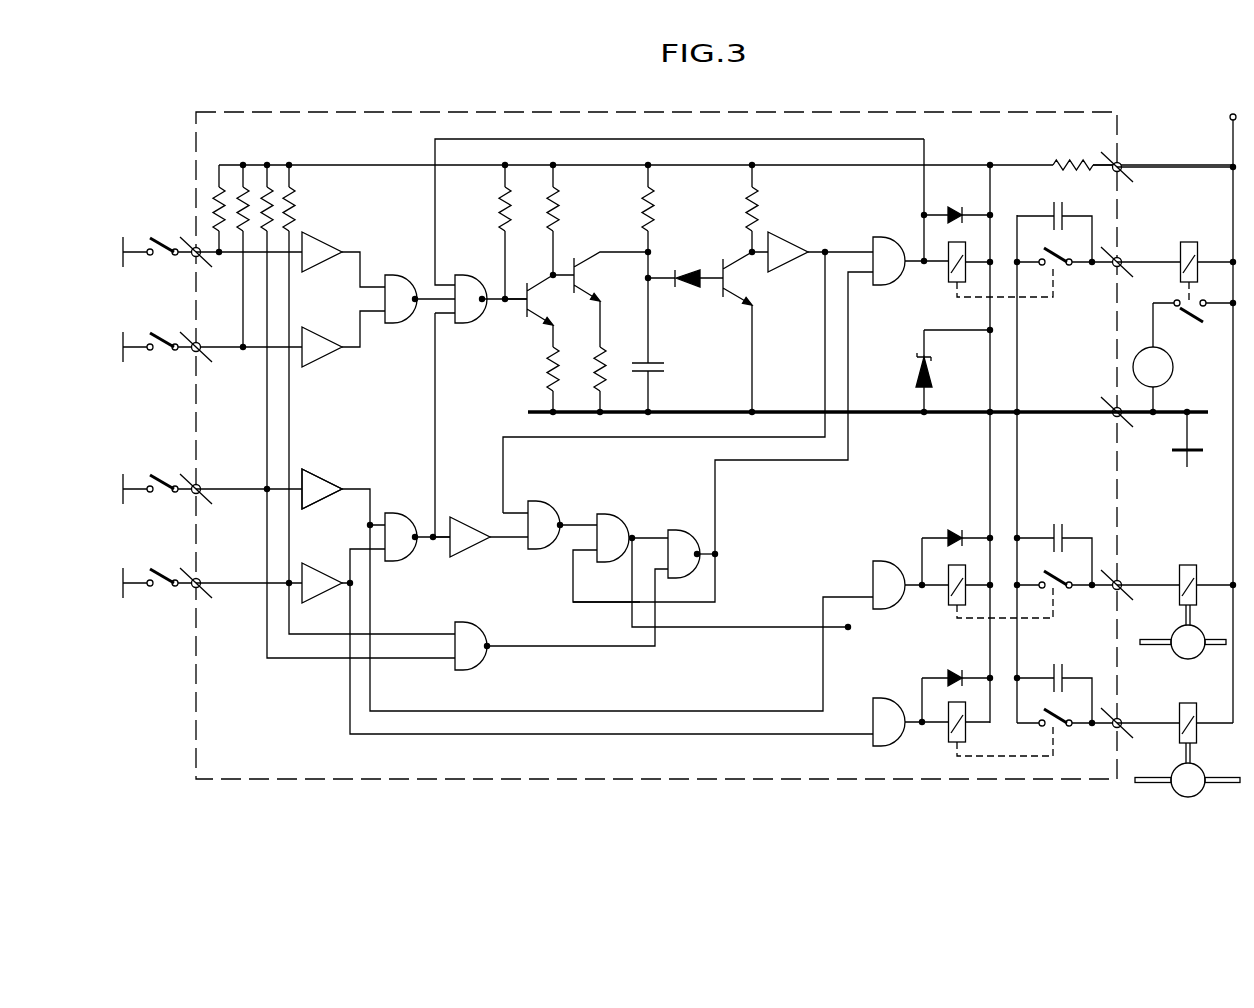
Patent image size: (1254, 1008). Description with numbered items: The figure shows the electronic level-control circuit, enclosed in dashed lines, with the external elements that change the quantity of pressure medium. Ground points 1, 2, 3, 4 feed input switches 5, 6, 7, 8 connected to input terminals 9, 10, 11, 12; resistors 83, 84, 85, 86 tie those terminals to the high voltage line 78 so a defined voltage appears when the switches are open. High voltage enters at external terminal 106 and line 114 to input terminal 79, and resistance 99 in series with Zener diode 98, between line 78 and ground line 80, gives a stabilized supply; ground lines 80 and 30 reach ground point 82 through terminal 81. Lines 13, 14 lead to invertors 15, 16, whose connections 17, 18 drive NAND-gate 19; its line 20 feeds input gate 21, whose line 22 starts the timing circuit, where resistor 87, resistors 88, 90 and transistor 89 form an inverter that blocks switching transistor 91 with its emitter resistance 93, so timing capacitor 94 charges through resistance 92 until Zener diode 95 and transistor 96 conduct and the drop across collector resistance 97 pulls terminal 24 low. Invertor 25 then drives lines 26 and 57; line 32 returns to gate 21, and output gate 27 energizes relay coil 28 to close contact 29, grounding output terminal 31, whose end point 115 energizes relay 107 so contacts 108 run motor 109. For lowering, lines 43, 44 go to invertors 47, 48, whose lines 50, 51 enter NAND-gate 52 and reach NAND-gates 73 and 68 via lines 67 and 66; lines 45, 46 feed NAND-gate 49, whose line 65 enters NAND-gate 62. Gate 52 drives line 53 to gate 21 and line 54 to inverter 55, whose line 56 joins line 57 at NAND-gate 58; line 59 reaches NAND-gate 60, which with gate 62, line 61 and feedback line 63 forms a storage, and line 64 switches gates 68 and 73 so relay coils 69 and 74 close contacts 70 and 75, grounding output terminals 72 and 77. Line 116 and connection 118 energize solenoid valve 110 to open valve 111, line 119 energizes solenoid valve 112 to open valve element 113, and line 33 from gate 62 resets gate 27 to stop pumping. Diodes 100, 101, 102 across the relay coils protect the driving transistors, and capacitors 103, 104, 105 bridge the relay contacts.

The ground point 1 is at (120, 263).
The ground point 2 is at (120, 358).
The ground point 3 is at (120, 499).
The ground point 4 is at (120, 594).
The input switch 5 is at (159, 238).
The input switch 6 is at (161, 332).
The input switch 7 is at (159, 473).
The input switch 8 is at (159, 572).
The input terminal 9 is at (190, 264).
The input terminal 10 is at (190, 360).
The input terminal 11 is at (190, 501).
The input terminal 12 is at (190, 598).
The line 13 is at (302, 256).
The line 14 is at (302, 355).
The invertor 15 is at (316, 236).
The invertor 16 is at (324, 355).
The output line 17 is at (361, 280).
The output line 18 is at (364, 330).
The NAND-gate 19 is at (386, 297).
The line 20 is at (420, 304).
The input gate 21 is at (470, 284).
The line 22 is at (482, 308).
The terminal 24 is at (756, 262).
The invertor 25 is at (790, 236).
The line 26 is at (831, 254).
The output gate 27 is at (882, 244).
The relay coil 28 is at (948, 284).
The relay contact 29 is at (1066, 274).
The ground line 30 is at (1017, 357).
The output terminal 31 is at (1123, 255).
The line 32 is at (927, 142).
The line 33 is at (848, 462).
The line 43 is at (302, 485).
The line 44 is at (302, 581).
The line 45 is at (400, 633).
The line 46 is at (390, 659).
The inverter 47 is at (325, 484).
The inverter 48 is at (310, 590).
The NAND-gate 49 is at (477, 656).
The line 50 is at (385, 515).
The line 51 is at (384, 560).
The NAND-gate 52 is at (414, 532).
The line 53 is at (438, 406).
The line 54 is at (452, 528).
The inverter 55 is at (460, 551).
The line 56 is at (510, 540).
The line 57 is at (505, 468).
The fourth gating means 58 is at (548, 518).
The line 59 is at (578, 528).
The NAND-gate 60 is at (600, 562).
The line 61 is at (635, 537).
The third gating means 62 is at (692, 534).
The feedback line 63 is at (573, 601).
The line 64 is at (745, 626).
The line 65 is at (570, 648).
The line 66 is at (658, 710).
The line 67 is at (724, 736).
The fifth gating means 68 is at (875, 562).
The relay coil 69 is at (950, 605).
The relay contact 70 is at (1060, 594).
The output terminal 72 is at (1118, 570).
The fifth gating means 73 is at (866, 750).
The relay coil 74 is at (946, 746).
The relay contact 75 is at (1064, 731).
The output terminal 77 is at (1123, 728).
The high voltage line 78 is at (1108, 171).
The input terminal 79 is at (1123, 162).
The ground line 80 is at (938, 418).
The terminal 81 is at (1108, 426).
The ground point 82 is at (1188, 464).
The resistor 83 is at (206, 200).
The resistor 84 is at (235, 163).
The resistor 85 is at (278, 167).
The resistor 86 is at (295, 200).
The resistor 87 is at (502, 210).
The resistor 88 is at (560, 212).
The transistor 89 is at (518, 318).
The resistor 90 is at (552, 374).
The switching transistor 91 is at (578, 266).
The resistance 92 is at (655, 212).
The resistance 93 is at (602, 362).
The timing capacitor 94 is at (666, 367).
The Zener diode 95 is at (684, 284).
The transistor 96 is at (721, 263).
The collector resistance 97 is at (756, 212).
The Zener diode 98 is at (918, 364).
The resistance 99 is at (1052, 164).
The diode 100 is at (960, 207).
The diode 101 is at (948, 524).
The diode 102 is at (952, 669).
The capacitor 103 is at (1052, 214).
The capacitor 104 is at (1067, 520).
The capacitor 105 is at (1058, 669).
The external terminal 106 is at (1230, 116).
The relay 107 is at (1190, 253).
The relay contacts 108 is at (1182, 324).
The motor 109 is at (1173, 371).
The solenoid valve 110 is at (1190, 564).
The valve 111 is at (1185, 660).
The second solenoid valve 112 is at (1182, 702).
The valve element 113 is at (1205, 776).
The line 114 is at (1176, 171).
The end point 115 is at (1138, 267).
The line 116 is at (1153, 322).
The line 118 is at (1137, 593).
The line 119 is at (1160, 732).